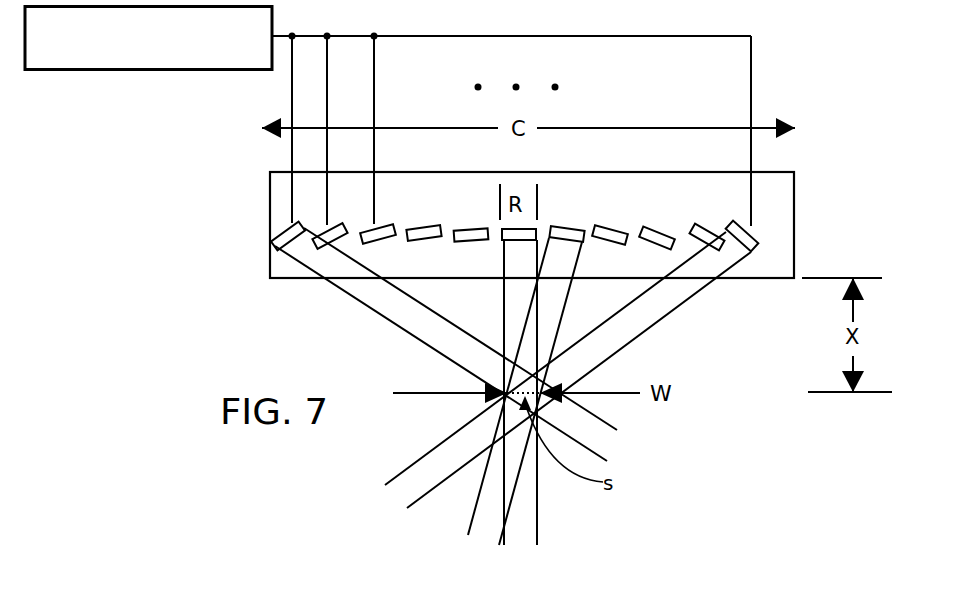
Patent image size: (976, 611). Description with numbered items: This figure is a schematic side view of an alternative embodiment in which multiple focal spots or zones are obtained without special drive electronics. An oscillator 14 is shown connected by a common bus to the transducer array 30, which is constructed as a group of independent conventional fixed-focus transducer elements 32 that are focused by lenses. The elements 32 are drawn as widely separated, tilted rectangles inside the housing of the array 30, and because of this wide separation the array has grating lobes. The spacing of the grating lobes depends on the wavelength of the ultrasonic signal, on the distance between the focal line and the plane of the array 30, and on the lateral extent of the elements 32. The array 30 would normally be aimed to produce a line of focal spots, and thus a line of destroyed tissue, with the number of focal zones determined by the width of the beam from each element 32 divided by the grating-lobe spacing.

The oscillator 14 is at (168, 55).
The transducer array 30 is at (811, 199).
The transducer elements 32 is at (697, 230).